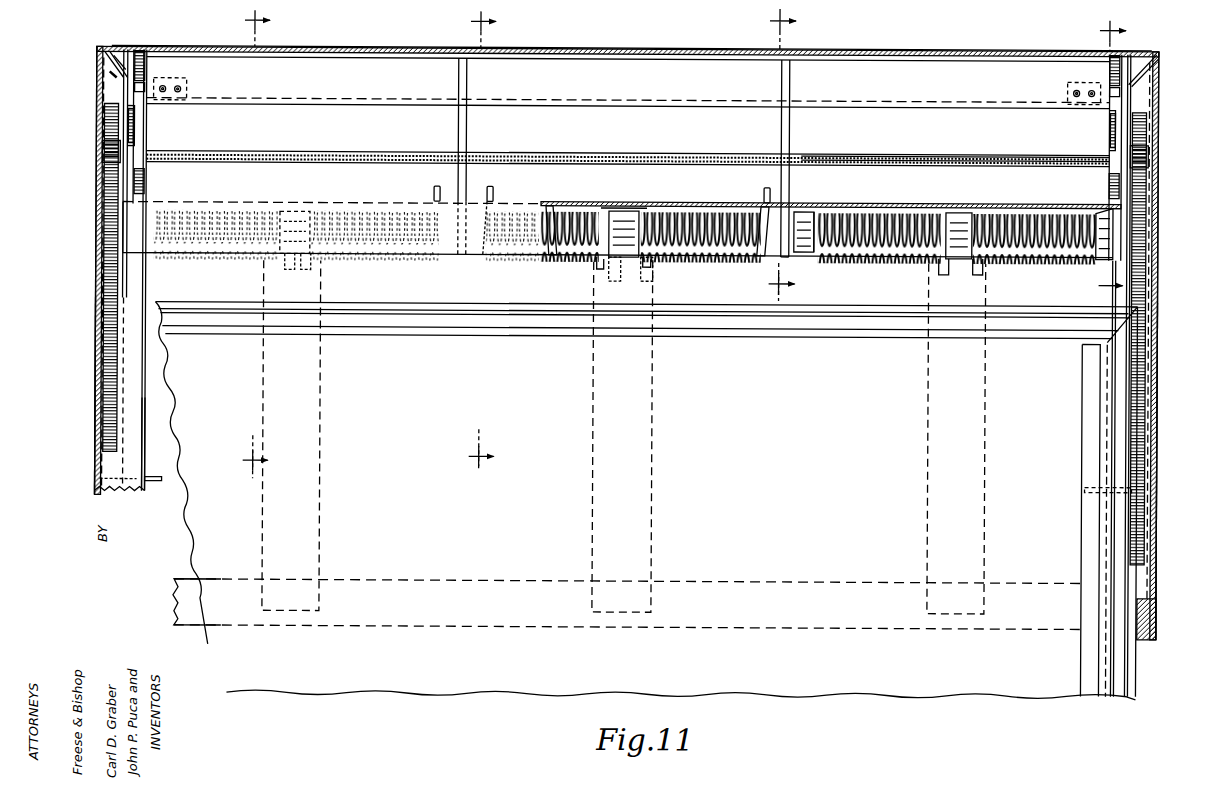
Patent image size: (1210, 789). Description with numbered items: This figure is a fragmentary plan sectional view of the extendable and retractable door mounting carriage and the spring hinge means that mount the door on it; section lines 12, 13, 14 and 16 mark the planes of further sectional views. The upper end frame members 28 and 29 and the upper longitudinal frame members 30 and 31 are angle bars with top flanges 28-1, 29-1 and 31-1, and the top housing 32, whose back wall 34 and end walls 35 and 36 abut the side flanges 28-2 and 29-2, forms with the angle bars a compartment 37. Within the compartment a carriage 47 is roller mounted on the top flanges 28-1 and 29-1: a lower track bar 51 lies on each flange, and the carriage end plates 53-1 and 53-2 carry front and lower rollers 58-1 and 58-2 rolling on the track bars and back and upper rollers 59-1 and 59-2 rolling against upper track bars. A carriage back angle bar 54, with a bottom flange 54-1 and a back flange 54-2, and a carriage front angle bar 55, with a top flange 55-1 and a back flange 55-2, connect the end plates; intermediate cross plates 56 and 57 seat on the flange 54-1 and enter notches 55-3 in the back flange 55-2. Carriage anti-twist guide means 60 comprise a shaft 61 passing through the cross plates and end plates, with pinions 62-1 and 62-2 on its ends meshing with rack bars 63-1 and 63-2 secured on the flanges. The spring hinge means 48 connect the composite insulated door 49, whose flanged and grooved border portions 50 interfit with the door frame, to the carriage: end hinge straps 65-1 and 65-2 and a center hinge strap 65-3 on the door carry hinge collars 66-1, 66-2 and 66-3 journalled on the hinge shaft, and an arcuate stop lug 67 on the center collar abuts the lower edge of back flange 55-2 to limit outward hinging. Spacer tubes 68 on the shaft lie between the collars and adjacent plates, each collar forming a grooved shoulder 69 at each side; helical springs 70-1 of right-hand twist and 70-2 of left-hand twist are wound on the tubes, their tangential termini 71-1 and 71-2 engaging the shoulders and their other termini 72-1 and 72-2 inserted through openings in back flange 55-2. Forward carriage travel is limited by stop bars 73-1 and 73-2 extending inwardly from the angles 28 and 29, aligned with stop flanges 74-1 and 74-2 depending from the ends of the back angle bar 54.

The section line 12- 12 is at (773, 155).
The section line 13- 13 is at (247, 244).
The section line 14- 14 is at (473, 240).
The section line 16- 16 is at (1101, 157).
The upper end frame member 28 is at (103, 92).
The top flange 28-1 is at (110, 78).
The side flange 28-2 is at (100, 472).
The upper end frame member 29 is at (1158, 97).
The top flange 29-1 is at (1140, 76).
The side flange 29-2 is at (1152, 592).
The upper longitudinal frame member 30 is at (197, 620).
The upper longitudinal frame member 31 is at (112, 54).
The top flange 31-1 is at (122, 76).
The top housing 32 is at (665, 48).
The back wall 34 is at (580, 48).
The end wall 35 is at (98, 325).
The end wall 36 is at (1152, 342).
The compartment 37 is at (157, 442).
The carriage 47 is at (445, 259).
The spring hinge means 48 is at (553, 256).
The composite insulated door 49 is at (940, 693).
The flanged and grooved border portions 50 is at (1118, 697).
The lower track bar 51 is at (140, 402).
The carriage end plate 53-1 is at (128, 132).
The carriage end plate 53-2 is at (1120, 128).
The carriage back angle bar 54 is at (290, 101).
The bottom flange 54-1 is at (287, 92).
The back flange 54-2 is at (355, 62).
The carriage front angle bar 55 is at (255, 202).
The top flange 55-1 is at (388, 202).
The back flange 55-2 is at (690, 201).
The notches 55-3 is at (502, 202).
The intermediate cross plate 56 is at (466, 130).
The intermediate cross plate 57 is at (790, 128).
The front and lower roller 58-1 is at (150, 180).
The front and lower roller 58-2 is at (1108, 182).
The back and upper roller 59-1 is at (138, 72).
The back and upper roller 59-2 is at (1108, 68).
The carriage anti-twist guide means 60 is at (948, 155).
The shaft 61 is at (874, 158).
The pinion 62-1 is at (108, 155).
The pinion 62-2 is at (1150, 152).
The rack bar 63-1 is at (110, 385).
The rack bar 63-2 is at (1148, 205).
The end hinge strap 65-1 is at (322, 482).
The end hinge strap 65-2 is at (985, 478).
The center hinge strap 65-3 is at (652, 462).
The hinge collar 66-1 is at (316, 208).
The hinge collar 66-2 is at (962, 209).
The center hinge collar 66-3 is at (632, 209).
The arcuate stop lug 67 is at (612, 205).
The spacer tubes 68 is at (810, 253).
The shoulder 69 is at (598, 267).
The helical spring 70-1 is at (550, 205).
The helical spring 70-2 is at (722, 205).
The tangential terminus 71-1 is at (612, 283).
The tangential terminus 71-2 is at (652, 281).
The tangential terminus 72-1 is at (490, 201).
The tangential terminus 72-2 is at (766, 201).
The stop bar 73-1 is at (156, 484).
The stop bar 73-2 is at (1097, 490).
The stop flange 74-1 is at (175, 104).
The stop flange 74-2 is at (1068, 104).